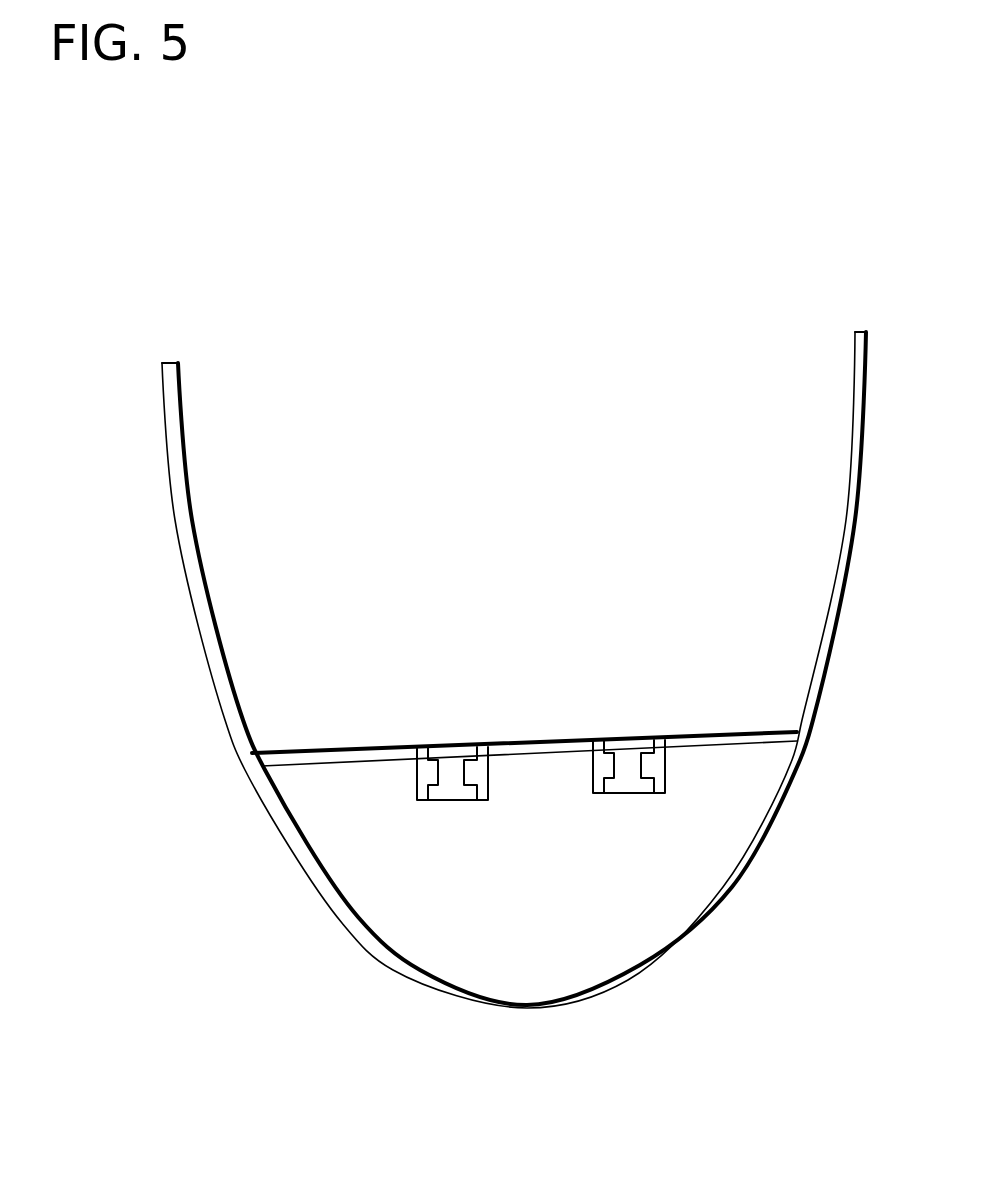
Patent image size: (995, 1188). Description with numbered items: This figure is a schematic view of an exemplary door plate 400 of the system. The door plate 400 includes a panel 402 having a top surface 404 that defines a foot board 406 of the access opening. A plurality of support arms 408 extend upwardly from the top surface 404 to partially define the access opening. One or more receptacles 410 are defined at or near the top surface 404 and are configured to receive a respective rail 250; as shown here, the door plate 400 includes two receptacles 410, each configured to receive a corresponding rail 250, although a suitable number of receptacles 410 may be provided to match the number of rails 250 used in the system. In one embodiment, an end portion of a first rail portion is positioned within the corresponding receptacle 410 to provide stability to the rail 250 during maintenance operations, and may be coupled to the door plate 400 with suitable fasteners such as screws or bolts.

The door plate 400 is at (380, 210).
The panel 402 is at (622, 922).
The top surface 404 is at (345, 747).
The foot board 406 is at (540, 742).
The support arms 408 is at (189, 485).
The receptacles 410 is at (417, 775).
The rail 250 is at (450, 798).